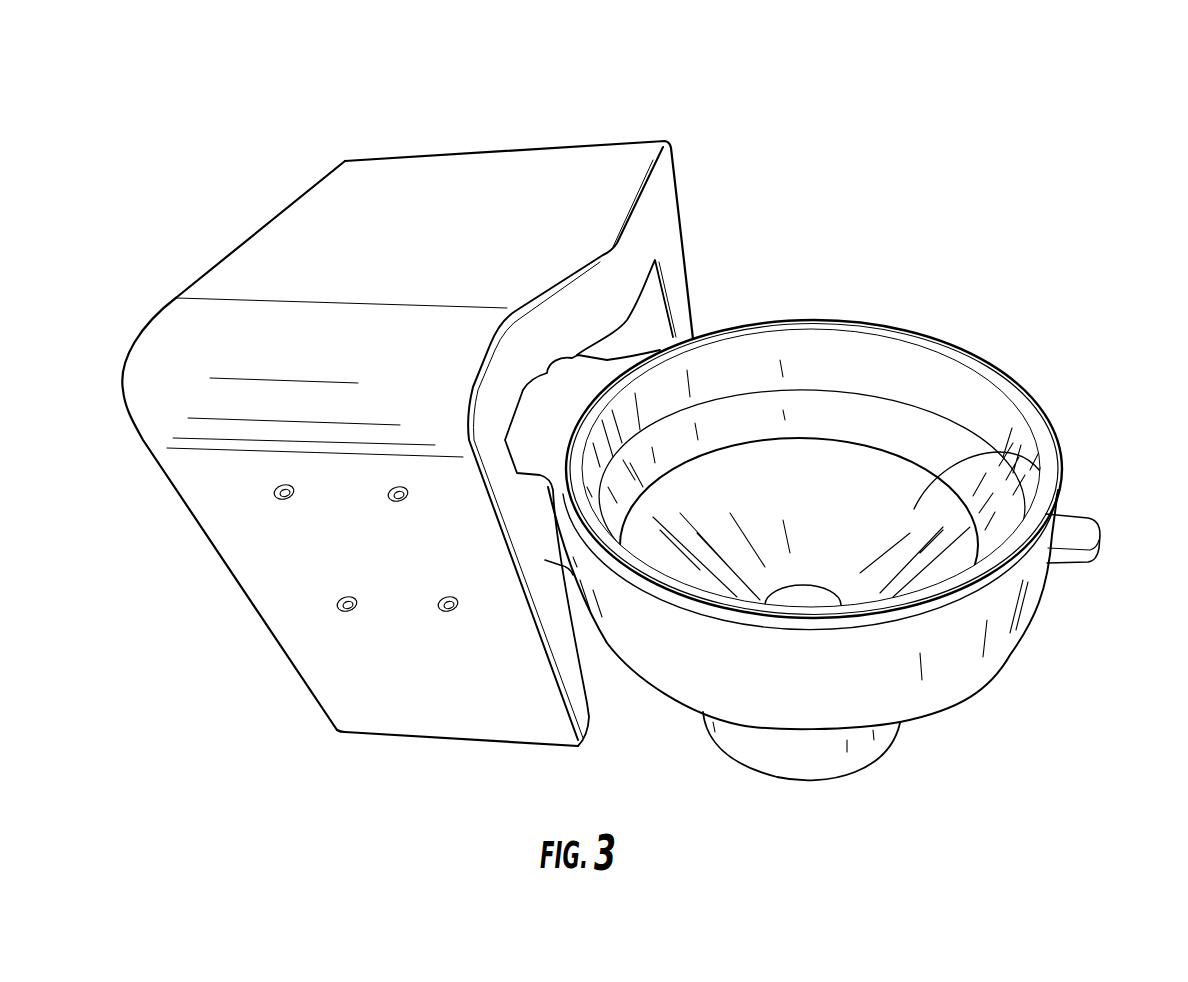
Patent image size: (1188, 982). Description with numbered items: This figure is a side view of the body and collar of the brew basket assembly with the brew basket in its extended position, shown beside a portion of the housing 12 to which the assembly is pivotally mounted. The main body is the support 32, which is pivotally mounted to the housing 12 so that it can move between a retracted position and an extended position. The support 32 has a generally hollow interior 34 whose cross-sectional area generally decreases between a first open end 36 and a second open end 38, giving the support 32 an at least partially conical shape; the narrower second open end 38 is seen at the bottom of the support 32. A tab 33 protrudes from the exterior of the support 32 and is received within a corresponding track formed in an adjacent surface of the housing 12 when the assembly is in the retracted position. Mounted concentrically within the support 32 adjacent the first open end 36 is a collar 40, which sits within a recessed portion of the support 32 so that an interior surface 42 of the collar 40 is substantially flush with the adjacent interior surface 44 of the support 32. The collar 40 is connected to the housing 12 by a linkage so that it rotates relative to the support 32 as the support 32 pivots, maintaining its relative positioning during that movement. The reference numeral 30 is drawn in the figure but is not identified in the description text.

The housing 12 is at (456, 203).
The bowl 30 is at (1013, 380).
The support 32 is at (1003, 661).
The tab 33 is at (1078, 531).
The hollow interior 34 is at (788, 477).
The first open end 36 is at (1055, 486).
The second open end 38 is at (827, 760).
The collar 40 is at (943, 353).
The interior surface of the collar 42 is at (855, 382).
The interior surface of the support 44 is at (913, 507).